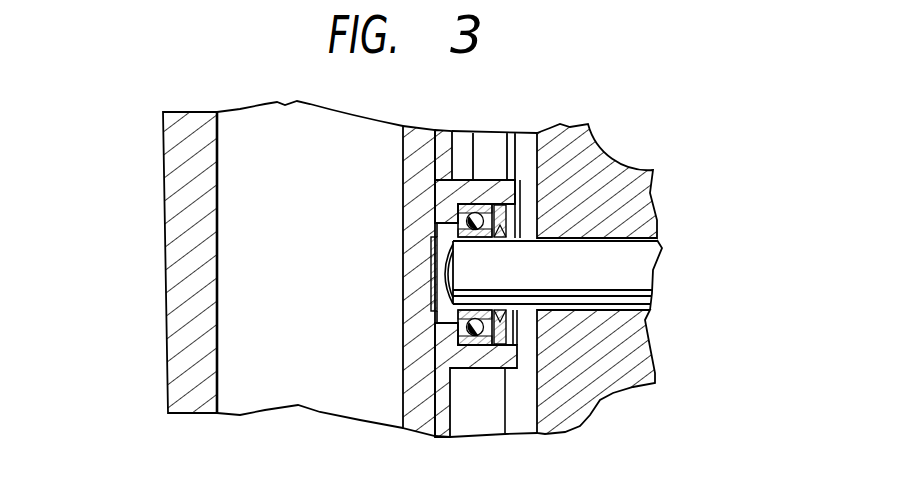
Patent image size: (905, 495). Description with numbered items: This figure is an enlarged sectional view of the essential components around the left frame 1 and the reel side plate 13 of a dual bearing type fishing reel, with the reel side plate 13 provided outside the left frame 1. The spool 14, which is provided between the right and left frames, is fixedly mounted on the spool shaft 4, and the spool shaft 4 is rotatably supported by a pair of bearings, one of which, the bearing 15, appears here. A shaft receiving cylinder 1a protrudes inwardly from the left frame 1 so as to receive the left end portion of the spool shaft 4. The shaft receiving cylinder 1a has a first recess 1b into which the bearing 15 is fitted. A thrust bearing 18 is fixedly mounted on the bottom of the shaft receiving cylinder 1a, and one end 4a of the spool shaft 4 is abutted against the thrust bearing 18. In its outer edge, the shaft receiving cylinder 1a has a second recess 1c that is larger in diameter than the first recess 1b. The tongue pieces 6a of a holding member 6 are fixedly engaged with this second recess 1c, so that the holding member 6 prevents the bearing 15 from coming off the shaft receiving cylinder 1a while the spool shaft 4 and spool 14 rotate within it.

The left frame 1 is at (400, 156).
The shaft receiving cylinder 1a is at (473, 133).
The first recess 1b is at (437, 213).
The second recess 1c is at (510, 345).
The spool shaft 4 is at (527, 232).
The one end of the spool shaft 4a is at (468, 273).
The holding member 6 is at (522, 319).
The tongue pieces 6a is at (508, 335).
The reel side plate 13 is at (163, 150).
The spool 14 is at (615, 153).
The bearing 15 is at (445, 327).
The thrust bearing 18 is at (431, 247).